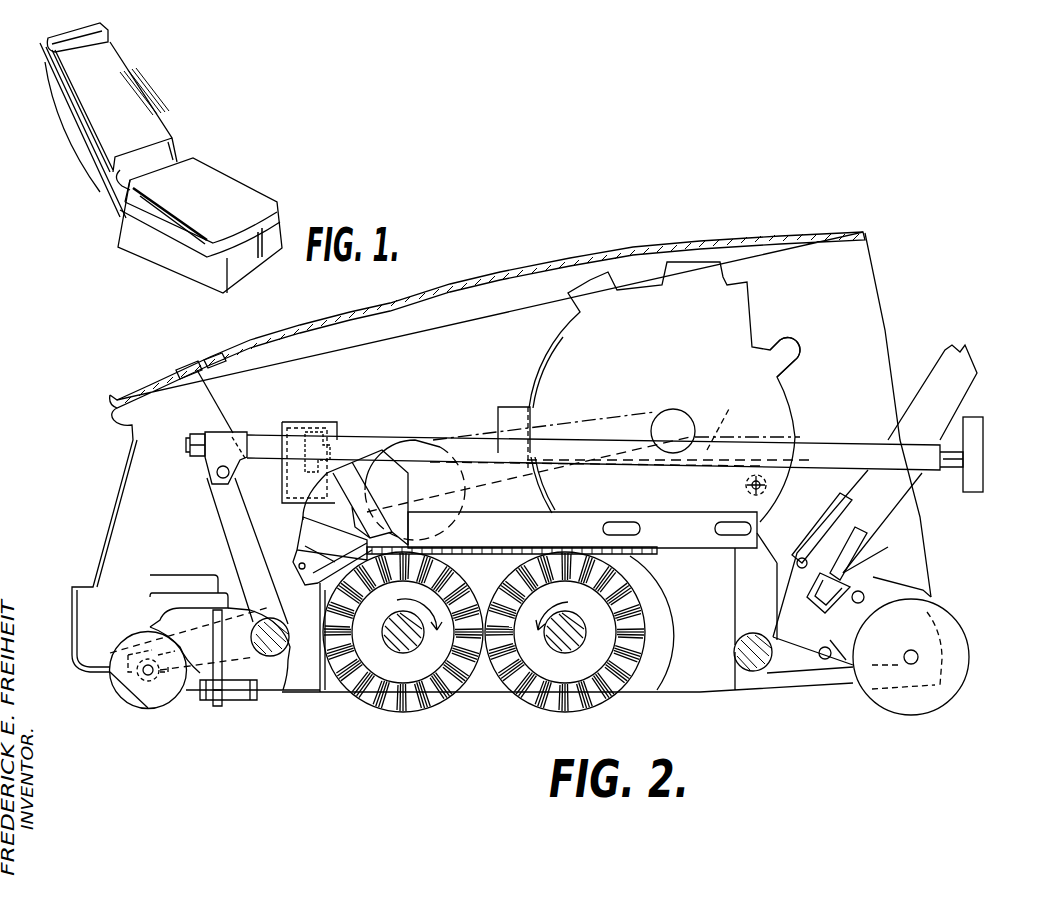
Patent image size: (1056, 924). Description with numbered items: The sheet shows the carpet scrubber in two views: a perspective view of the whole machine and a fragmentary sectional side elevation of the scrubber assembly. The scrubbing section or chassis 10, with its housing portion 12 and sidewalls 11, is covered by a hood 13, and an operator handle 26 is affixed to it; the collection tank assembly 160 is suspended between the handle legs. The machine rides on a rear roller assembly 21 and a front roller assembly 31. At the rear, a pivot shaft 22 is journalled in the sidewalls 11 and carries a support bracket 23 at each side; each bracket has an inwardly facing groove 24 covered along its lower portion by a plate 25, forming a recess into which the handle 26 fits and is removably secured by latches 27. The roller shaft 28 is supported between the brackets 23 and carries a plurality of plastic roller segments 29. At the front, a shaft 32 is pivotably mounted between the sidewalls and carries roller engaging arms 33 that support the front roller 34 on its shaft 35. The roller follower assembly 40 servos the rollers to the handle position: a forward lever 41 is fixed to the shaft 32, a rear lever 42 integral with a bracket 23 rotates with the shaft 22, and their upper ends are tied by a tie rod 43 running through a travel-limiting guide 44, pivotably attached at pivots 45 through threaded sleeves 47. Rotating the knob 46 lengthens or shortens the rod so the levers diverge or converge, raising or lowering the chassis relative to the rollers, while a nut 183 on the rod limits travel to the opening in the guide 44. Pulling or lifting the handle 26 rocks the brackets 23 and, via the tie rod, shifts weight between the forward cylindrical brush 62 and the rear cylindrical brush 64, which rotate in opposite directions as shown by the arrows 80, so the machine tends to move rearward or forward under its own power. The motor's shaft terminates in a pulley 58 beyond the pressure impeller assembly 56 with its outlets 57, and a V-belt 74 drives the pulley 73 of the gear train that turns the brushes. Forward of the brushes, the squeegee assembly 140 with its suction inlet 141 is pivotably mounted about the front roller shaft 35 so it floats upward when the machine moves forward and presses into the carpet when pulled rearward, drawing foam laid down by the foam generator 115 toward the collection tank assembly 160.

In FIG. 1, the chassis 10 is at (248, 176).
In FIG. 2, the chassis 10 is at (63, 612).
In FIG. 2, the sidewalls 11 is at (180, 523).
In FIG. 2, the front wall of housing 12 is at (118, 490).
In FIG. 2, the hood 13 is at (632, 252).
In FIG. 2, the rear roller assembly 21 is at (972, 612).
In FIG. 2, the pivot shaft 22 is at (760, 665).
In FIG. 2, the support bracket 23 is at (924, 548).
In FIG. 2, the grooves 24 is at (890, 525).
In FIG. 2, the plates 25 is at (830, 642).
In FIG. 1, the operator handle 26 is at (99, 216).
In FIG. 2, the operator handle 26 is at (965, 380).
In FIG. 2, the latches 27 is at (845, 580).
In FIG. 2, the roller shaft 28 is at (910, 664).
In FIG. 2, the roller segments 29 is at (969, 661).
In FIG. 2, the front roller assembly 31 is at (154, 720).
In FIG. 2, the shaft 32 is at (283, 662).
In FIG. 2, the roller engaging arms 33 is at (125, 652).
In FIG. 2, the front roller 34 is at (130, 688).
In FIG. 2, the front roller shaft 35 is at (155, 676).
In FIG. 2, the roller follower assembly 40 is at (341, 430).
In FIG. 2, the forward lever 41 is at (247, 551).
In FIG. 2, the rear lever 42 is at (762, 530).
In FIG. 2, the tie rod 43 is at (262, 437).
In FIG. 2, the travel-limiting guide 44 is at (298, 422).
In FIG. 2, the pivot 45 is at (215, 478).
In FIG. 2, the knob 46 is at (985, 430).
In FIG. 2, the sleeves 47 is at (234, 434).
In FIG. 2, the pressure impeller assembly 56 is at (684, 355).
In FIG. 2, the outlets 57 is at (797, 376).
In FIG. 2, the pulley 58 is at (685, 411).
In FIG. 2, the forward cylindrical brush 62 is at (404, 704).
In FIG. 2, the rear brush 64 is at (588, 706).
In FIG. 2, the pulley 73 is at (448, 488).
In FIG. 2, the V-belt 74 is at (596, 414).
In FIG. 2, the arrows 80 is at (481, 612).
In FIG. 2, the foam generator 115 is at (294, 510).
In FIG. 2, the squeegee assembly 140 is at (244, 710).
In FIG. 2, the suction inlet 141 is at (162, 578).
In FIG. 1, the collection tank assembly 160 is at (164, 85).
In FIG. 2, the nut 183 is at (310, 430).